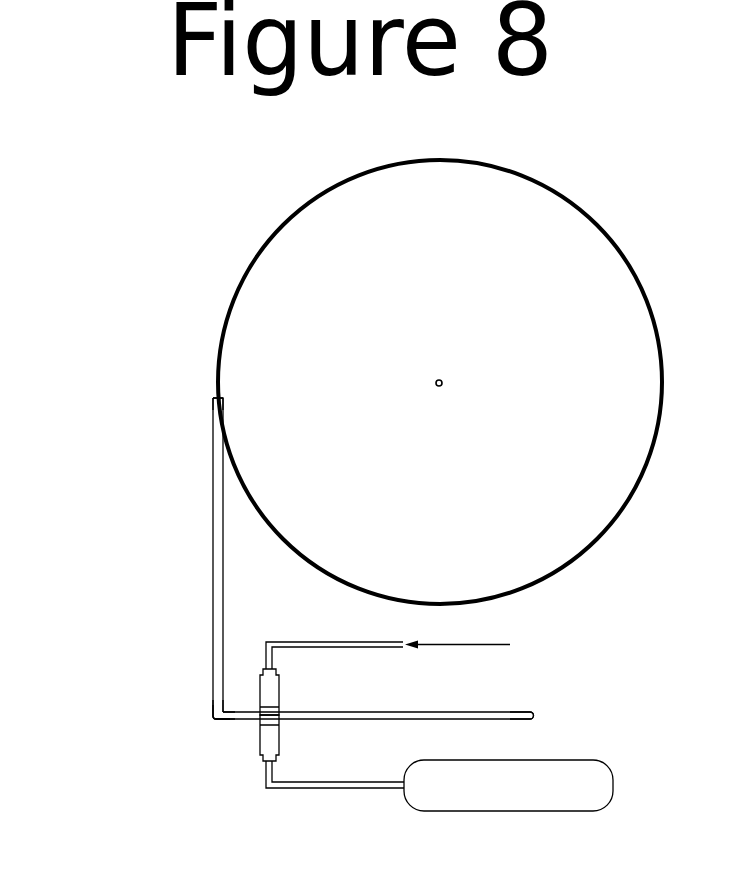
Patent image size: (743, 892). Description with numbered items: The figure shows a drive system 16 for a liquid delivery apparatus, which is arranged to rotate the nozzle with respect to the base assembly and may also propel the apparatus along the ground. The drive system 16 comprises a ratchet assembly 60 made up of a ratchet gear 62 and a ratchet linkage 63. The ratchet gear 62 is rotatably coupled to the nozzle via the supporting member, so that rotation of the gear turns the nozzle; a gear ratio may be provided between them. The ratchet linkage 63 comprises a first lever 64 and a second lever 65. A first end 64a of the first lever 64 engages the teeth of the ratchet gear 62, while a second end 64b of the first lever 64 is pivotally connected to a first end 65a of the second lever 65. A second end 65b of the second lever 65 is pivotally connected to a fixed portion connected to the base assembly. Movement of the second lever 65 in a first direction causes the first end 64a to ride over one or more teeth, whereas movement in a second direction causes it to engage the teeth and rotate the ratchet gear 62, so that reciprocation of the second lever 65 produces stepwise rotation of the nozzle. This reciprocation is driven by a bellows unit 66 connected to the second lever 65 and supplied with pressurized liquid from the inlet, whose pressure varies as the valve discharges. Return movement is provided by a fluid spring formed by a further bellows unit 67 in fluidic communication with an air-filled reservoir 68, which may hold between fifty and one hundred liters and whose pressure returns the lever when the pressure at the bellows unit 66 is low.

The drive system 16 is at (137, 474).
The ratchet assembly 60 is at (170, 286).
The ratchet gear 62 is at (250, 265).
The ratchet linkage 63 is at (152, 647).
The first lever 64 is at (205, 588).
The first end of the first lever 64a is at (205, 400).
The second end of the first lever 64b is at (205, 710).
The second lever 65 is at (385, 702).
The first end of the second lever 65a is at (210, 727).
The second end of the second lever 65b is at (543, 715).
The bellows unit 66 is at (282, 683).
The further bellows unit 67 is at (282, 737).
The reservoir 68 is at (588, 786).